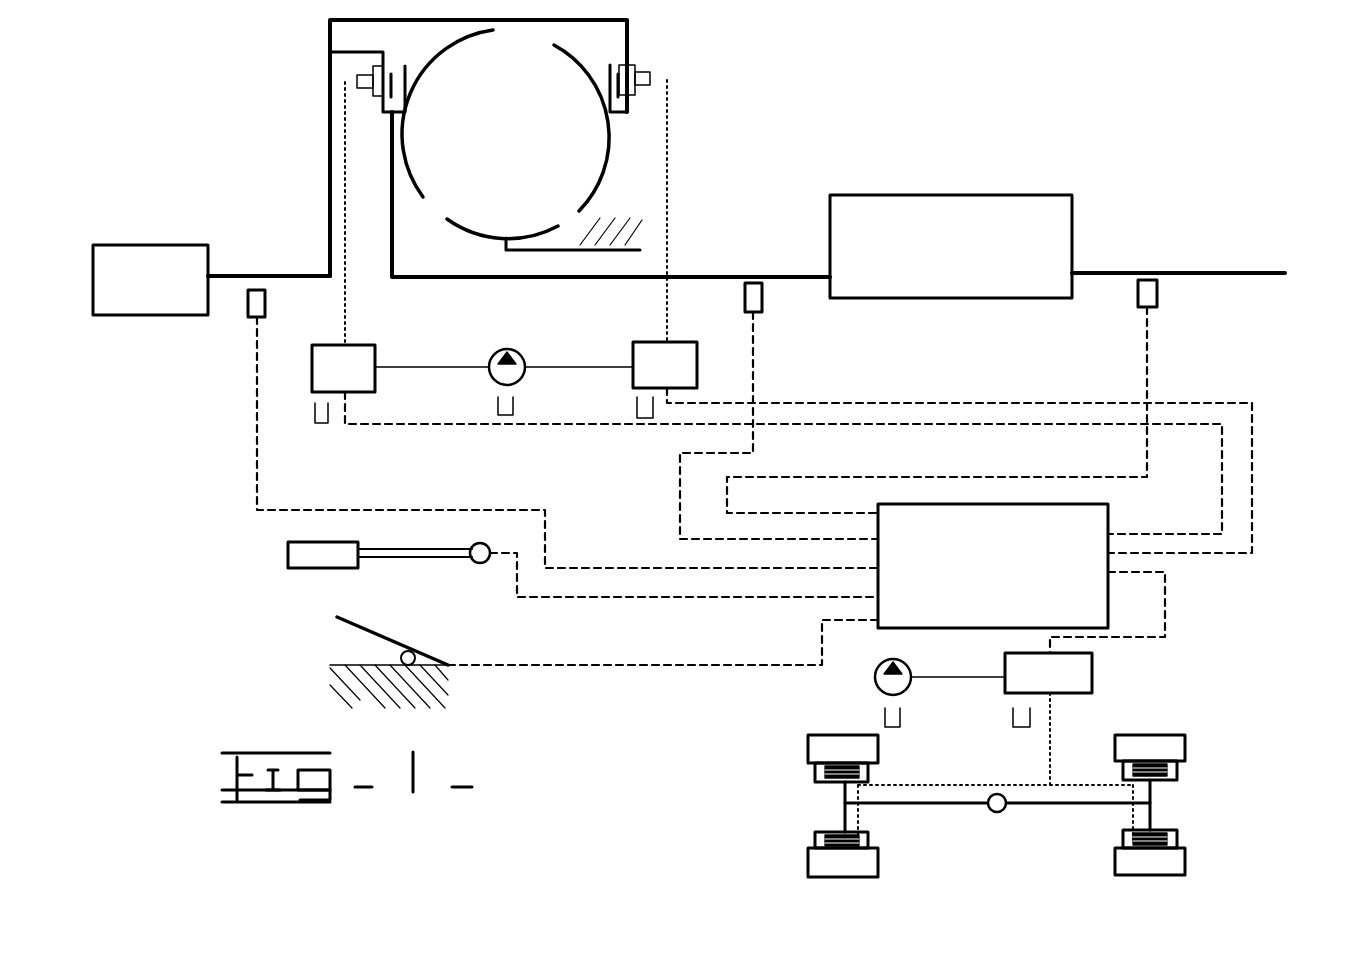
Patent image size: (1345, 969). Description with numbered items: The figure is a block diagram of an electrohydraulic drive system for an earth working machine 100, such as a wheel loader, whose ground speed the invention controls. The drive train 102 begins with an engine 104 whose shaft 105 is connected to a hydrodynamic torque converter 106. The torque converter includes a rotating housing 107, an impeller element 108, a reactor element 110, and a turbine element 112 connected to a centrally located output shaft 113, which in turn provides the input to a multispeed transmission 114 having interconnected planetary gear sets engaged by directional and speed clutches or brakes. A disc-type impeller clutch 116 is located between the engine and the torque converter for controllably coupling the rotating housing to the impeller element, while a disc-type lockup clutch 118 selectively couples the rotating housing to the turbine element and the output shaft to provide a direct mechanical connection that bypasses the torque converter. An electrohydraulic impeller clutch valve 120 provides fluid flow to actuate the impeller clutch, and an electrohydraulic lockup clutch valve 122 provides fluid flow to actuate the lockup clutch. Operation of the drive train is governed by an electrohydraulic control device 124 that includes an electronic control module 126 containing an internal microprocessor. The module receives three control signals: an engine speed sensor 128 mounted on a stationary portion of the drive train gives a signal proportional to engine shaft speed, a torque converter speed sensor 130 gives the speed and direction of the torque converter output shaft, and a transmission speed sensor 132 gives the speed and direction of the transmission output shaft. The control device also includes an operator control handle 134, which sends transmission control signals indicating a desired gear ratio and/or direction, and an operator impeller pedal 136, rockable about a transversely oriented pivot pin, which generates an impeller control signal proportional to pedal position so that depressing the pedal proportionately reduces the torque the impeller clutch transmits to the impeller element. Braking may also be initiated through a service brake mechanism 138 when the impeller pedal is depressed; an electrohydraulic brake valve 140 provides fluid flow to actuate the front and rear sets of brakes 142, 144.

The earth working machine 100 is at (238, 614).
The drive train 102 is at (1152, 112).
The engine 104 is at (148, 245).
The shaft 105 is at (232, 274).
The hydrodynamic torque converter 106 is at (522, 140).
The rotating housing 107 is at (330, 22).
The impeller element 108 is at (578, 62).
The reactor element 110 is at (480, 230).
The turbine element 112 is at (440, 60).
The output shaft 113 is at (490, 280).
The multispeed transmission 114 is at (1034, 195).
The impeller clutch 116 is at (631, 63).
The lockup clutch 118 is at (398, 64).
The impeller clutch valve 120 is at (641, 342).
The lockup clutch valve 122 is at (370, 345).
The electrohydraulic control device 124 is at (1241, 606).
The electronic control module 126 is at (1100, 505).
The engine speed sensor 128 is at (266, 298).
The torque converter speed sensor 130 is at (764, 293).
The transmission speed sensor 132 is at (1159, 291).
The operator control handle 134 is at (292, 542).
The operator impeller pedal 136 is at (358, 618).
The service brake mechanism 138 is at (1232, 795).
The brake valve 140 is at (1092, 677).
The front set of brakes 142 is at (1178, 772).
The rear set of brakes 144 is at (870, 776).